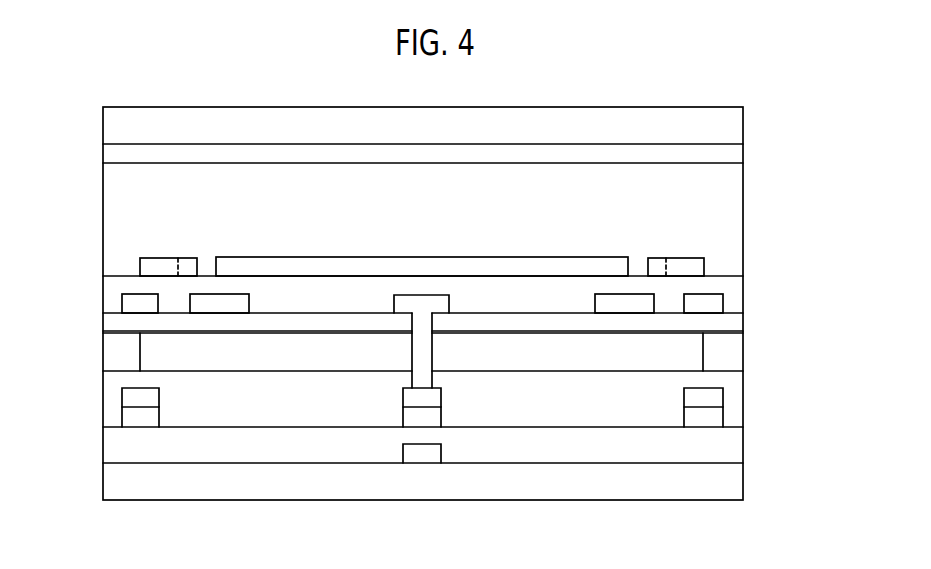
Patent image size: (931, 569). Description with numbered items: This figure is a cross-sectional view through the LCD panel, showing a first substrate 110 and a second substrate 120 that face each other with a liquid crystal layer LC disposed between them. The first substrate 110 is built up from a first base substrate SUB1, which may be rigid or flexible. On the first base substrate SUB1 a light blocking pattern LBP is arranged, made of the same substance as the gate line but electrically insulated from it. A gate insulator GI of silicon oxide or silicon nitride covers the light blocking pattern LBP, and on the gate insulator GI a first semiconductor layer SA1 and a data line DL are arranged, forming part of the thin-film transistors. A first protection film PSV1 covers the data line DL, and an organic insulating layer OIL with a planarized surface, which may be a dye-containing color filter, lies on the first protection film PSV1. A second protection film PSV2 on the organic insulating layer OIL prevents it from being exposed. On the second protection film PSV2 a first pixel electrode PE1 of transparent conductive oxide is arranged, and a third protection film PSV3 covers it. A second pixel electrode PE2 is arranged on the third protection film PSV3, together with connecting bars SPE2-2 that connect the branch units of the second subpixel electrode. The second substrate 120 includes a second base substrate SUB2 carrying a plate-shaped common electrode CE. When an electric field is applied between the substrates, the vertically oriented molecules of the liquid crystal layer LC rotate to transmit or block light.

The second base substrate SUB2 is at (738, 122).
The common electrode CE is at (738, 158).
The second substrate 120 is at (812, 108).
The liquid crystal layer LC is at (738, 213).
The connecting bar SPE2-2 is at (187, 258).
The second pixel electrode PE2 is at (371, 265).
The first pixel electrode PE1 is at (426, 300).
The third protection film PSV3 is at (738, 290).
The second protection film PSV2 is at (738, 324).
The organic insulating layer OIL is at (738, 355).
The first protection film PSV1 is at (738, 393).
The data line DL is at (122, 396).
The first semiconductor layer SA1 is at (122, 418).
The gate insulator GI is at (738, 452).
The light blocking pattern LBP is at (424, 456).
The first base substrate SUB1 is at (738, 490).
The first substrate 110 is at (812, 272).